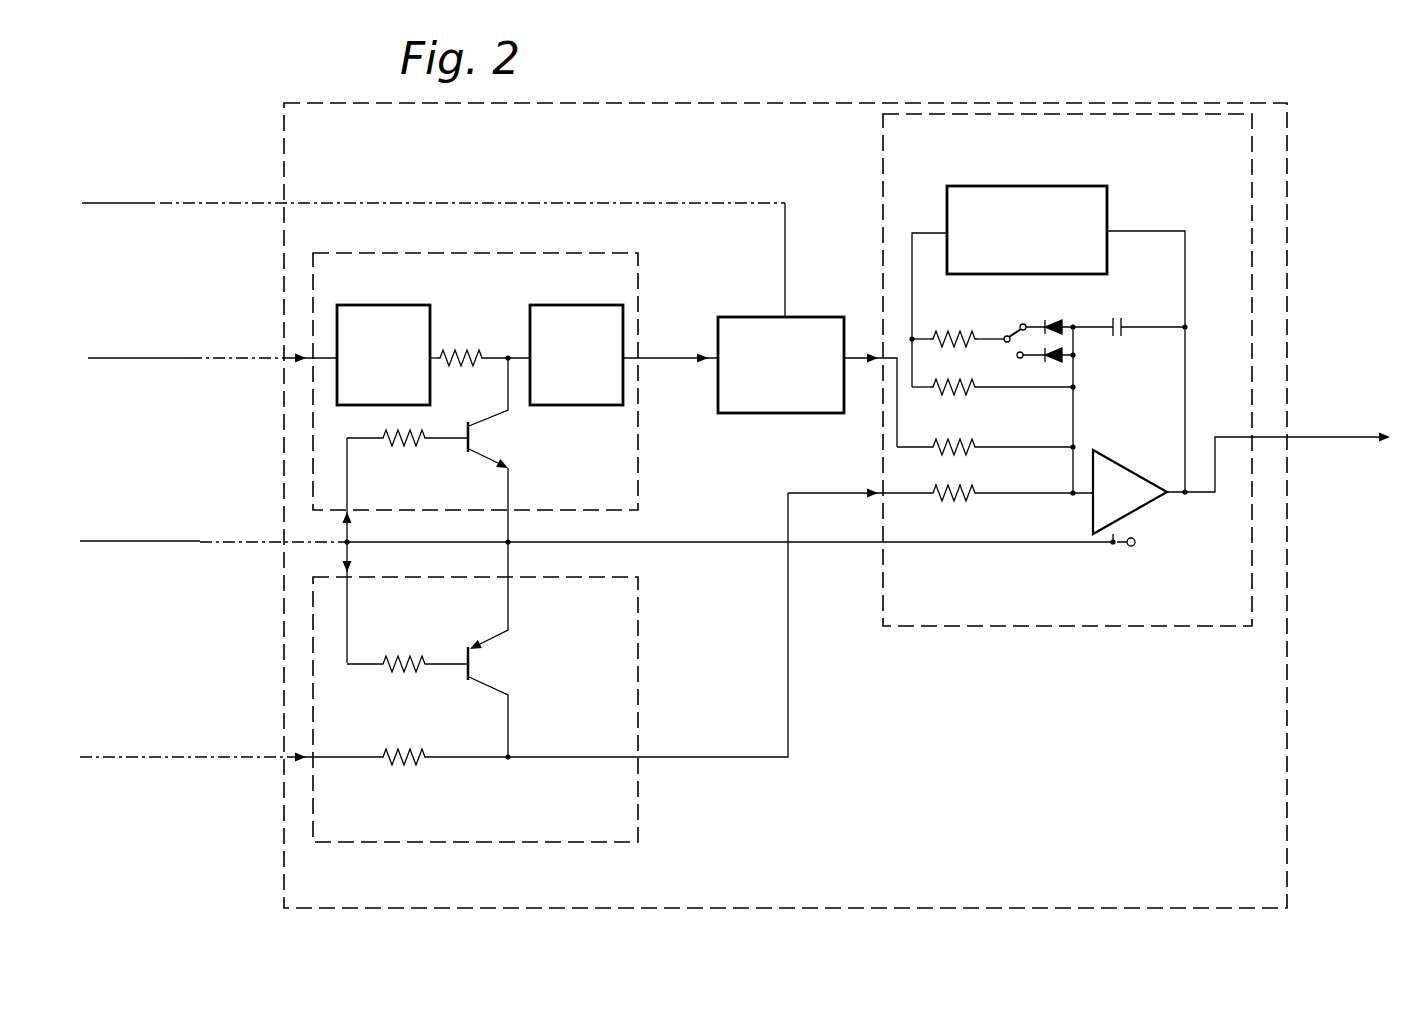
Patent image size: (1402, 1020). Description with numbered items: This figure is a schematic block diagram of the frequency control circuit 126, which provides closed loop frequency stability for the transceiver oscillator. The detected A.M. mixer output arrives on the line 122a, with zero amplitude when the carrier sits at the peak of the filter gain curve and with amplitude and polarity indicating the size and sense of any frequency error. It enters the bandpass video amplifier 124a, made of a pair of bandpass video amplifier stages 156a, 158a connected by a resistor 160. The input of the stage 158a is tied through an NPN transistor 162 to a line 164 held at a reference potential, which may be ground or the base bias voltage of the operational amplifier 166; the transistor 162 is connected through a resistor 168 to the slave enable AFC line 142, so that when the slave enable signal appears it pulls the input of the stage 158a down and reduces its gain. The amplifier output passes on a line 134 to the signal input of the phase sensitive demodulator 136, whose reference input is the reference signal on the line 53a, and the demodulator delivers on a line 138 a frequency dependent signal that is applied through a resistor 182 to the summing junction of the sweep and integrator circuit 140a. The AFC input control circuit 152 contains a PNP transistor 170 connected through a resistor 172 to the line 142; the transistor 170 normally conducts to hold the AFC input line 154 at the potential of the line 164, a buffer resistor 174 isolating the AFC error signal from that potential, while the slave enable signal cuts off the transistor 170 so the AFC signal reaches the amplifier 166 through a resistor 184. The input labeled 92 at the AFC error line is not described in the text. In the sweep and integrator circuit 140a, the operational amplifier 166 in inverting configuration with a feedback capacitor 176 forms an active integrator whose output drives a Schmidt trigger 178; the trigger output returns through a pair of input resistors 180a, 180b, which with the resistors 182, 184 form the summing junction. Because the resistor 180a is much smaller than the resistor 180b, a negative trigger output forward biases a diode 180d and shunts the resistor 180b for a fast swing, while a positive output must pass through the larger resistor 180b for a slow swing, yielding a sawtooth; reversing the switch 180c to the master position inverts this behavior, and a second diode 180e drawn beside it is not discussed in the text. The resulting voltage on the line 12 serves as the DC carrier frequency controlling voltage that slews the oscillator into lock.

The frequency control circuit 126 is at (914, 99).
The sweep and integrator circuit 140a is at (878, 170).
The bandpass video amplifier 124a is at (644, 262).
The AFC input control circuit 152 is at (648, 688).
The reference signal line 53a is at (205, 205).
The mixer output line 122a is at (205, 362).
The bandpass video amplifier stage 156a is at (430, 320).
The bandpass video amplifier stage 158a is at (530, 318).
The resistor 160 is at (458, 366).
The NPN transistor 162 is at (478, 438).
The resistor 168 is at (404, 446).
The PNP transistor 170 is at (478, 665).
The resistor 172 is at (404, 656).
The buffer resistor 174 is at (402, 750).
The line 134 is at (648, 365).
The phase sensitive demodulator 136 is at (800, 315).
The line 138 is at (857, 356).
The Schmidt trigger 178 is at (1108, 200).
The input resistor 180a is at (950, 332).
The input resistor 180b is at (942, 398).
The switch 180c is at (1010, 332).
The diode 180d is at (1062, 319).
The diode 180e is at (1062, 366).
The feedback capacitor 176 is at (1119, 338).
The resistor 182 is at (942, 452).
The resistor 184 is at (944, 505).
The operational amplifier 166 is at (1090, 524).
The line 164 is at (660, 543).
The AFC input line 154 is at (791, 724).
The slave enable AFC line 142 is at (220, 545).
The AFC error input 92 is at (234, 760).
The line 12 is at (1345, 440).